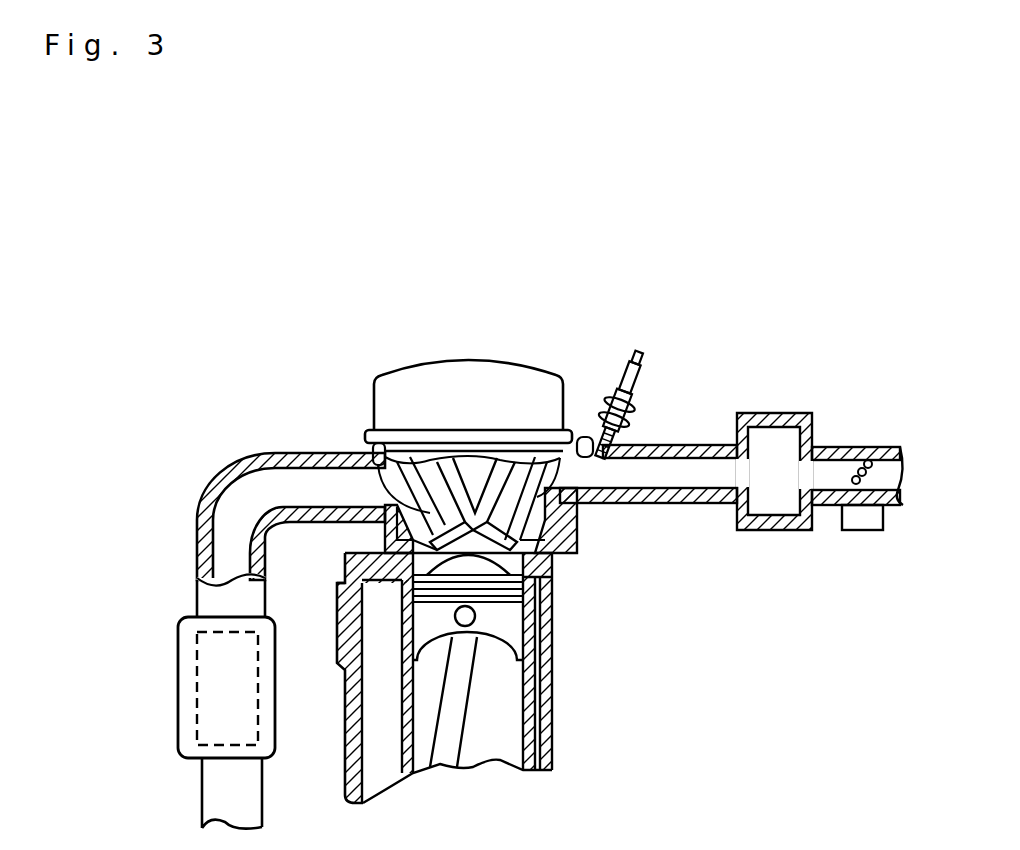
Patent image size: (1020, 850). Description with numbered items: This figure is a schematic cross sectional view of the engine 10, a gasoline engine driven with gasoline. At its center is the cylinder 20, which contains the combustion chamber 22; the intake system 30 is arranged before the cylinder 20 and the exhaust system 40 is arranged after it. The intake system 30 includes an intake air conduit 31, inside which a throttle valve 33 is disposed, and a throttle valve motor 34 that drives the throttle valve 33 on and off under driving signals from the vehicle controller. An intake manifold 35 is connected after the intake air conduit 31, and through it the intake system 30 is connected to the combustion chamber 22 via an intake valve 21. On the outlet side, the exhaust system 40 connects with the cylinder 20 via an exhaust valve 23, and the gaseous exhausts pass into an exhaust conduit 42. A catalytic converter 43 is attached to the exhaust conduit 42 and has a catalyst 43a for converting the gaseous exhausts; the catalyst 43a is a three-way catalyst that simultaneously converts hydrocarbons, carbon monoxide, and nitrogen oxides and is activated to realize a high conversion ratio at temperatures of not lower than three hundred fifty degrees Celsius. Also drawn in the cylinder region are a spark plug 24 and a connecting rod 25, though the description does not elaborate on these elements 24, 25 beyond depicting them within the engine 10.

The engine 10 is at (515, 347).
The cylinder 20 is at (550, 613).
The intake valve 21 is at (505, 556).
The combustion chamber 22 is at (503, 565).
The exhaust valve 23 is at (365, 437).
The spark plug 24 is at (620, 353).
The connecting rod 25 is at (545, 665).
The intake system 30 is at (695, 420).
The intake air conduit 31 is at (708, 508).
The throttle valve 33 is at (862, 462).
The throttle valve motor 34 is at (863, 532).
The intake manifold 35 is at (583, 432).
The exhaust system 40 is at (183, 502).
The exhaust conduit 42 is at (237, 453).
The catalytic converter 43 is at (178, 652).
The catalyst 43a is at (197, 707).